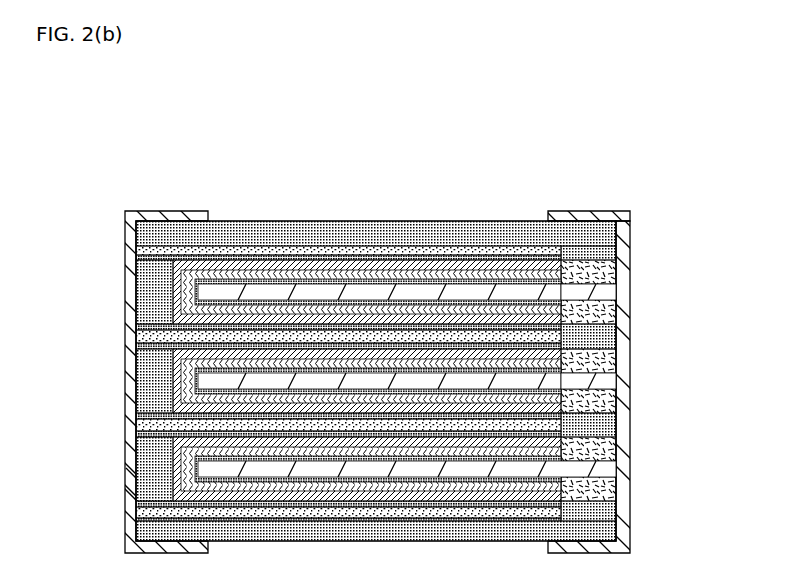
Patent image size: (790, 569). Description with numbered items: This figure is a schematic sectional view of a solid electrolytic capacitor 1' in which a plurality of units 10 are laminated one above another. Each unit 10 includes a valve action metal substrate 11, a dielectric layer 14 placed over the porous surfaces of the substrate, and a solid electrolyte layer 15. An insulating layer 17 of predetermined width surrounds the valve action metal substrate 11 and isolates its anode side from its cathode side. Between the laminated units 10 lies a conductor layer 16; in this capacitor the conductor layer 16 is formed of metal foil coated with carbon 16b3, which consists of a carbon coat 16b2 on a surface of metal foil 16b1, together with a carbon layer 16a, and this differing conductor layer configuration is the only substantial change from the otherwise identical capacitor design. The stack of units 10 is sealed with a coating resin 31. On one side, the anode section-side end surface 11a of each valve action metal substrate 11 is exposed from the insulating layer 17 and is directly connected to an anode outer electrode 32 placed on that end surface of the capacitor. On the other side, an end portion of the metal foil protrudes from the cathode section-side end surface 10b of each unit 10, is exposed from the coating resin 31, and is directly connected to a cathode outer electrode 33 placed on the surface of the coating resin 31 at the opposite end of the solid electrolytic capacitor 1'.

The solid electrolytic capacitor 1' is at (380, 321).
The unit 10 is at (614, 262).
The cathode section-side end surface 10b is at (158, 375).
The valve action metal substrate 11 is at (612, 285).
The anode section-side end surface 11a is at (612, 373).
The dielectric layer 14 is at (465, 275).
The solid electrolyte layer 15 is at (432, 265).
The conductor layer 16 is at (335, 106).
The carbon layer 16a is at (348, 239).
The metal foil 16b1 is at (217, 239).
The carbon coat 16b2 is at (280, 248).
The metal foil coated with carbon 16b3 is at (283, 143).
The insulating layer 17 is at (592, 262).
The coating resin 31 is at (518, 218).
The anode outer electrode 32 is at (612, 478).
The cathode outer electrode 33 is at (125, 478).